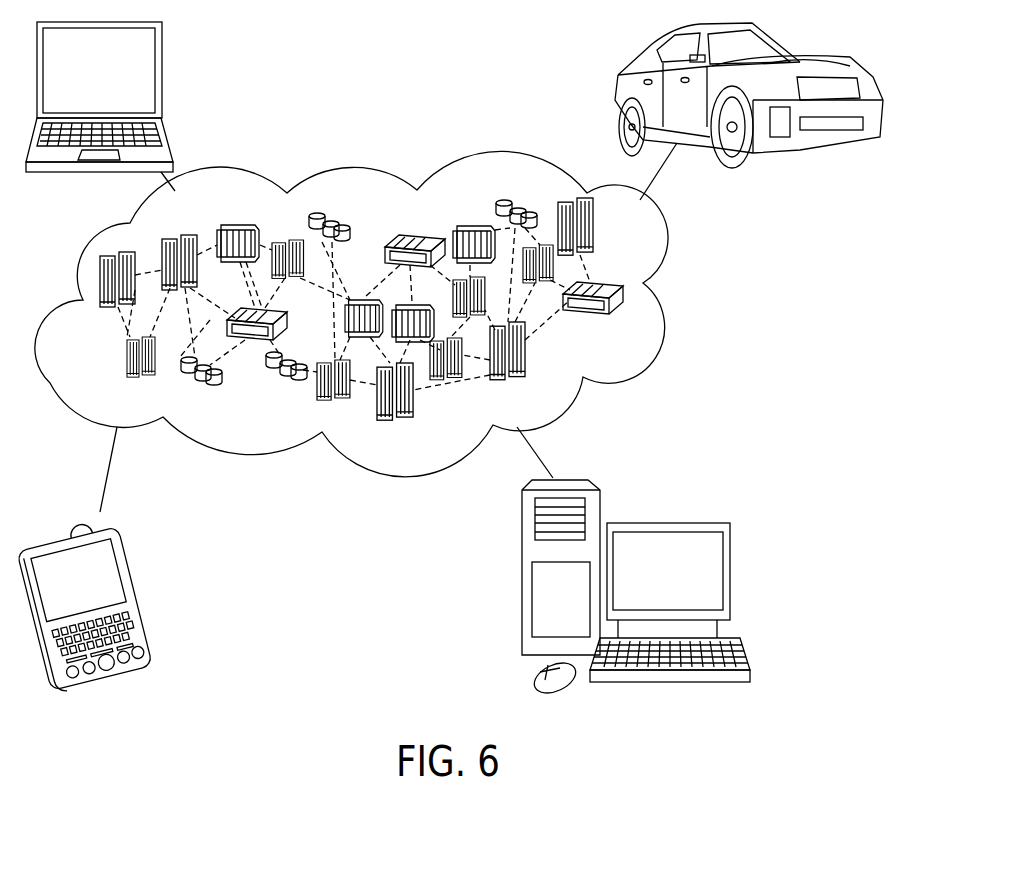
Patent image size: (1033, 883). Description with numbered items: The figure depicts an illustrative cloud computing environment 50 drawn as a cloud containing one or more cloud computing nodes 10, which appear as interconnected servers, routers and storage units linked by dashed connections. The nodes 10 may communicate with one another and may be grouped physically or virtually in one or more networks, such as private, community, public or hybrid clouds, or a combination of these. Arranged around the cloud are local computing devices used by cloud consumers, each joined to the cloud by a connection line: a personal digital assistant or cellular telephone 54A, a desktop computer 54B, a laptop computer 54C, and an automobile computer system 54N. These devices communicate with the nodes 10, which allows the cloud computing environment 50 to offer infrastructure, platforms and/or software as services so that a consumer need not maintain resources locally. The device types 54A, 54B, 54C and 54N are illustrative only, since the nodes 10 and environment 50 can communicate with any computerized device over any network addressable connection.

The cloud computing node 10 is at (637, 332).
The cloud computing environment 50 is at (683, 235).
The personal digital assistant or cellular telephone 54A is at (130, 568).
The desktop computer 54B is at (730, 570).
The laptop computer 54C is at (163, 75).
The automobile computer system 54N is at (797, 45).